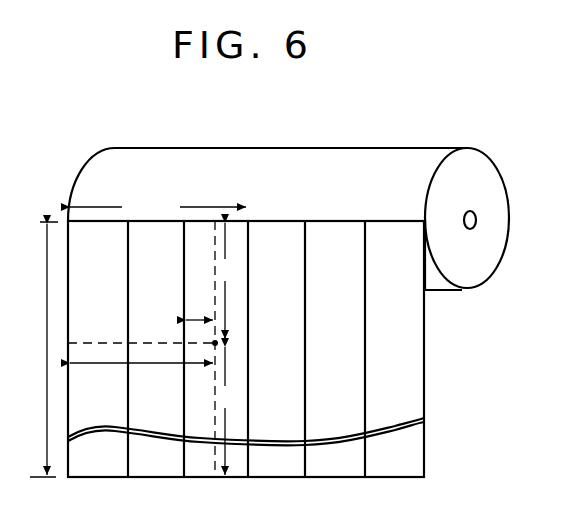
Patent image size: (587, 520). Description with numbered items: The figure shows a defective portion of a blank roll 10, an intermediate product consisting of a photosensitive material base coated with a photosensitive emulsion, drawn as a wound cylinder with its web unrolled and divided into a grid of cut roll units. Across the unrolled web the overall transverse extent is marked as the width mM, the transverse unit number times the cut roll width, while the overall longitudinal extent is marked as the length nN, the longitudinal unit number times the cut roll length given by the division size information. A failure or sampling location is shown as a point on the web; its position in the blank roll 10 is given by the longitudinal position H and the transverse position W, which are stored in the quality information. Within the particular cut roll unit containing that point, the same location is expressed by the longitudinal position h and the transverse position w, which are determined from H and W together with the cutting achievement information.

The blank roll 10 is at (484, 184).
The longitudinal extent n·N of the blank roll nN is at (38, 349).
The transverse extent m·M of the blank roll mM is at (158, 207).
The transverse position W is at (141, 376).
The transverse position of failure in cut roll w is at (199, 307).
The longitudinal position of failure in cut roll h is at (226, 281).
The longitudinal position H is at (226, 411).